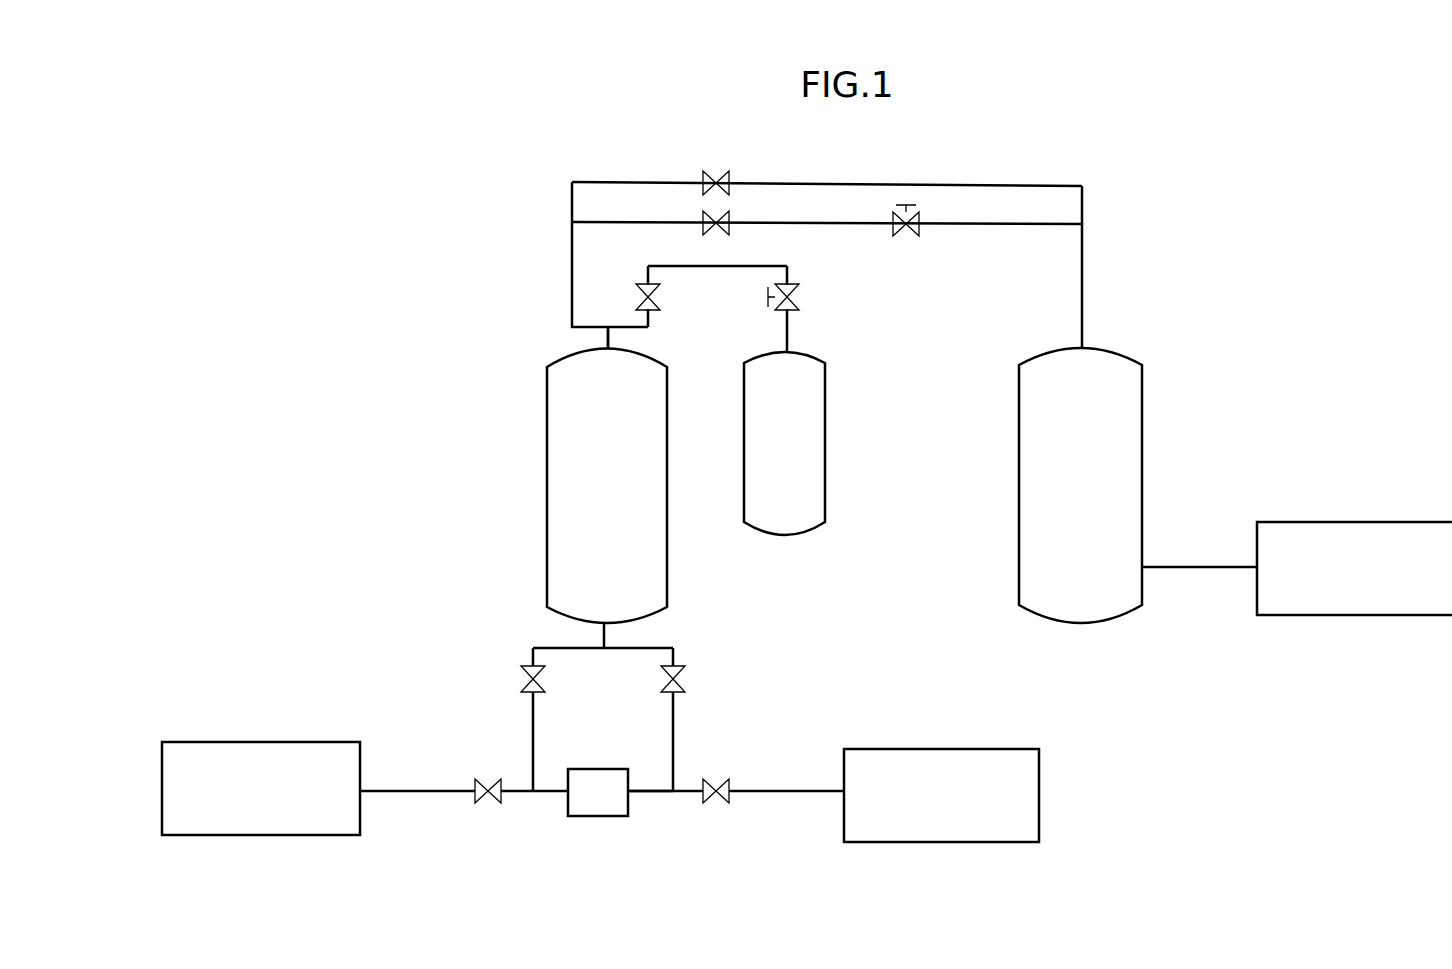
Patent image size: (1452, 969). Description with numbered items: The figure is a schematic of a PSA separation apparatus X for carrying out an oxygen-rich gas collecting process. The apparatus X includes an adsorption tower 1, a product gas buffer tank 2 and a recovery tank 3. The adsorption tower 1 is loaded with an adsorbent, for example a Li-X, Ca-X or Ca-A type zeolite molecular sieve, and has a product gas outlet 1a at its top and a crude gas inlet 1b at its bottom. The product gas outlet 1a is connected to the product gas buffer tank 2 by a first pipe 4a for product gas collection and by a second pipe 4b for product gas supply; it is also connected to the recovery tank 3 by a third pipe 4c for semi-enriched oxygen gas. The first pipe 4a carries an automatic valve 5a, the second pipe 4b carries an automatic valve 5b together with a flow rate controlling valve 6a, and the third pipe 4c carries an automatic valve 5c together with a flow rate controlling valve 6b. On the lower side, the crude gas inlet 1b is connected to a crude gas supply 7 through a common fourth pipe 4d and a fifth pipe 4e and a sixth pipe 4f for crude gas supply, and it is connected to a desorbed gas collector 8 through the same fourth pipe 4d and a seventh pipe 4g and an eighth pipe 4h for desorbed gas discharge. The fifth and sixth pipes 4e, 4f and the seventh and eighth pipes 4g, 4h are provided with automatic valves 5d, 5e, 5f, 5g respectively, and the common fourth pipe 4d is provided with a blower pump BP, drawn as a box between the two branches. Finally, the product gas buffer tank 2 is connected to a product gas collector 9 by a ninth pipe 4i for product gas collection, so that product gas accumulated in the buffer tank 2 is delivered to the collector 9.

The adsorption tower 1 is at (546, 461).
The product gas outlet 1a is at (616, 350).
The crude gas inlet 1b is at (612, 627).
The product gas buffer tank 2 is at (1143, 401).
The recovery tank 3 is at (827, 401).
The first pipe 4a is at (856, 182).
The second pipe 4b is at (981, 226).
The third pipe 4c is at (766, 266).
The common fourth pipe 4d is at (650, 790).
The fifth pipe 4e is at (410, 790).
The sixth pipe 4f is at (675, 722).
The seventh pipe 4g is at (532, 722).
The eighth pipe 4h is at (786, 790).
The ninth pipe 4i is at (1190, 566).
The automatic valve 5a is at (712, 171).
The automatic valve 5b is at (702, 229).
The automatic valve 5c is at (661, 297).
The automatic valve 5d is at (500, 803).
The automatic valve 5e is at (682, 670).
The automatic valve 5f is at (541, 682).
The automatic valve 5g is at (718, 803).
The flow rate controlling valve 6a is at (894, 235).
The flow rate controlling valve 6b is at (800, 297).
The crude gas supply 7 is at (305, 741).
The desorbed gas collector 8 is at (984, 748).
The product gas collector 9 is at (1400, 521).
The blower pump BP is at (598, 818).
The PSA separation apparatus X is at (506, 268).